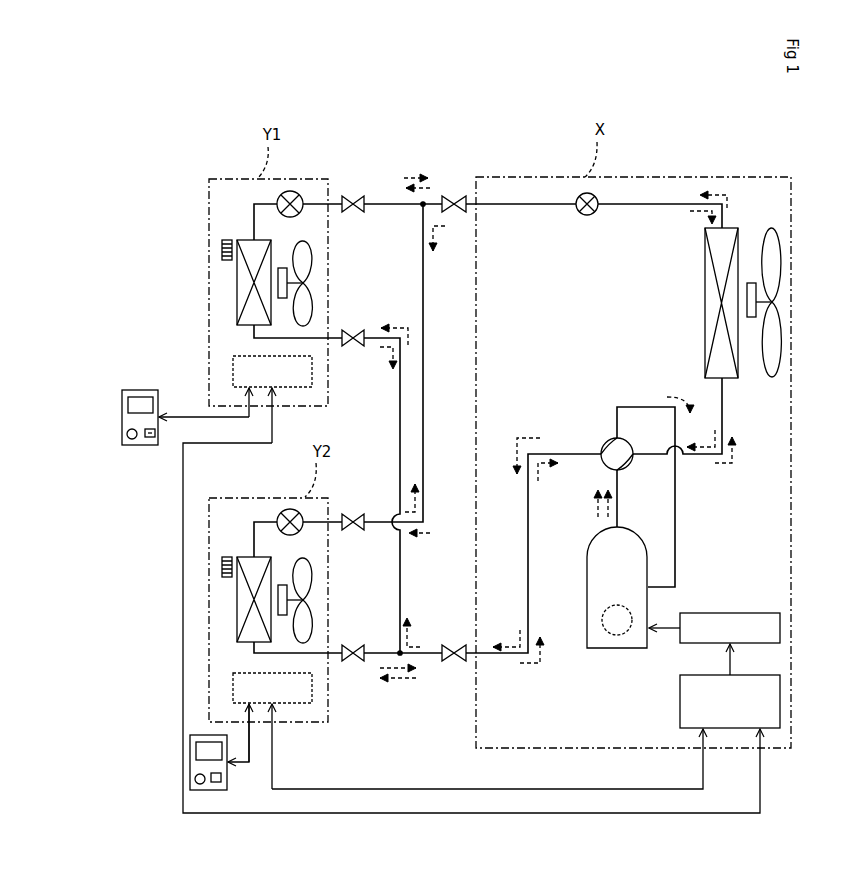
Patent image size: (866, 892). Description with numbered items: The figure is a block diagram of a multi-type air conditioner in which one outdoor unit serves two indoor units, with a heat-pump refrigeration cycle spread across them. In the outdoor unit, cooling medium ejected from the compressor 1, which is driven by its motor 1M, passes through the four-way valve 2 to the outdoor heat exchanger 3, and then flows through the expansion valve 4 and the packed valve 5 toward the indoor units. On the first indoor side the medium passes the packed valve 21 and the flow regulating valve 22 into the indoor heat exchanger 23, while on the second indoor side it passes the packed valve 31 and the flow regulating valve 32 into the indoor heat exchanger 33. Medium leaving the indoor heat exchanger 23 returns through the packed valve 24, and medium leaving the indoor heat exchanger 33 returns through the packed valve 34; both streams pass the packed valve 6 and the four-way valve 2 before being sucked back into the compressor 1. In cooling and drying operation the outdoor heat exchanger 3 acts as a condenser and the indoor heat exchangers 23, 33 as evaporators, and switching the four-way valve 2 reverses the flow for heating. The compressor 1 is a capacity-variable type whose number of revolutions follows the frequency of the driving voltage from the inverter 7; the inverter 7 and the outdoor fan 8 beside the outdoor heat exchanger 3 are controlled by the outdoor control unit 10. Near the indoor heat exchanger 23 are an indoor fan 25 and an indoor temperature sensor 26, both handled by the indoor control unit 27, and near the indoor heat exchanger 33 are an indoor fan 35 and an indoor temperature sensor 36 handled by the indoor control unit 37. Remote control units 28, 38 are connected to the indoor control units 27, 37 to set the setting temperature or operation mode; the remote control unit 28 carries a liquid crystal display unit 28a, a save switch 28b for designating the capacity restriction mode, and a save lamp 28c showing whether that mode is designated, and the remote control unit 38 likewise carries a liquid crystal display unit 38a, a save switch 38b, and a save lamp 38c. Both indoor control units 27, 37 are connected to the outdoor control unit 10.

The compressor 1 is at (603, 607).
The motor 1M is at (606, 634).
The four-way valve 2 is at (606, 442).
The outdoor heat exchanger 3 is at (705, 286).
The expansion valve 4 is at (587, 216).
The packed valve 5 is at (454, 196).
The packed valve 6 is at (454, 662).
The inverter 7 is at (757, 613).
The outdoor fan 8 is at (772, 228).
The outdoor control unit 10 is at (680, 680).
The packed valve 21 is at (353, 196).
The flow regulating valve 22 is at (292, 191).
The indoor heat exchanger 23 is at (249, 240).
The packed valve 24 is at (354, 330).
The indoor fan 25 is at (305, 243).
The indoor temperature sensor 26 is at (226, 262).
The indoor control unit 27 is at (243, 357).
The remote control unit 28 is at (125, 422).
The liquid crystal display unit 28a is at (122, 406).
The save switch 28b is at (150, 445).
The save lamp 28c is at (130, 445).
The packed valve 31 is at (353, 514).
The flow regulating valve 32 is at (290, 509).
The indoor heat exchanger 33 is at (249, 557).
The packed valve 34 is at (354, 645).
The indoor fan 35 is at (305, 560).
The indoor temperature sensor 36 is at (226, 579).
The indoor control unit 37 is at (243, 674).
The remote control unit 38 is at (210, 789).
The liquid crystal display unit 38a is at (190, 750).
The save switch 38b is at (216, 790).
The save lamp 38c is at (200, 790).